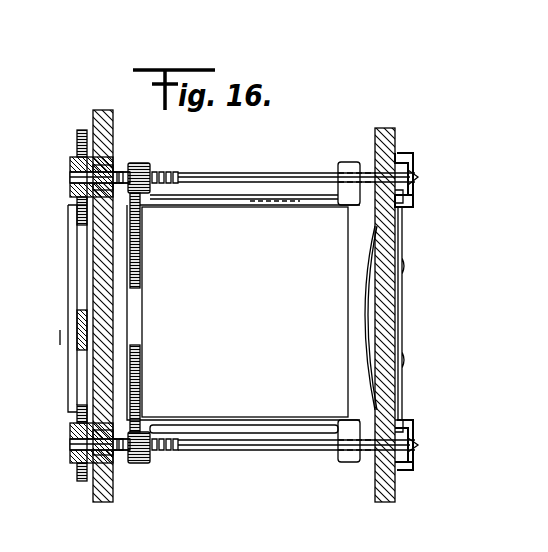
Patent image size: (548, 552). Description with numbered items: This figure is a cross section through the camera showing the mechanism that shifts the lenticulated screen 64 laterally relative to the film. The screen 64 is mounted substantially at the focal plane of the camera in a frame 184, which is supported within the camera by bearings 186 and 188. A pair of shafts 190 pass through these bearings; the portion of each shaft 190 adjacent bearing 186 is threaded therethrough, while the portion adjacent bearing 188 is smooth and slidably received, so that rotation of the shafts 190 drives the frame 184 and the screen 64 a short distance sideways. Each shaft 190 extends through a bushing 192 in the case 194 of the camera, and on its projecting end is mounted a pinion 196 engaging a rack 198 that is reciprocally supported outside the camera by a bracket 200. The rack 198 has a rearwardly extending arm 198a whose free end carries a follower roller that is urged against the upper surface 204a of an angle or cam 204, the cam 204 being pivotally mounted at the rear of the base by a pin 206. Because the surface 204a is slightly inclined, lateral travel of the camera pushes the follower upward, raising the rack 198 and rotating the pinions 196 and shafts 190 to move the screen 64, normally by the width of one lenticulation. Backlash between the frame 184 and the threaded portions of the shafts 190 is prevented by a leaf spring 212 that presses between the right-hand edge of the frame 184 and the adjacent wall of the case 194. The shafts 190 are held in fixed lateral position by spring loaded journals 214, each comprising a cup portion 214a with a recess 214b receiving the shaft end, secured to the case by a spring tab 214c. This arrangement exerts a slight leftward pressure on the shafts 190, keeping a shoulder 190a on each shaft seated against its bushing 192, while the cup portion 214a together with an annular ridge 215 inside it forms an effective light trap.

The lenticulated screen 64 is at (250, 266).
The frame 184 is at (255, 200).
The bearing 186 is at (140, 165).
The bearing 188 is at (346, 162).
The shaft 190 is at (220, 172).
The shoulder 190a is at (134, 208).
The bushing 192 is at (106, 166).
The case 194 is at (100, 128).
The pinion 196 is at (72, 168).
The rack 198 is at (79, 133).
The rearwardly extending arm 198a is at (78, 328).
The bracket 200 is at (70, 258).
The cam 204 is at (0, 414).
The upper surface 204a is at (30, 351).
The pin 206 is at (10, 424).
The leaf spring 212 is at (366, 353).
The spring loaded journal 214 is at (420, 153).
The cup portion 214a is at (404, 152).
The recess 214b is at (418, 180).
The spring tab 214c is at (402, 238).
The annular ridge 215 is at (402, 194).